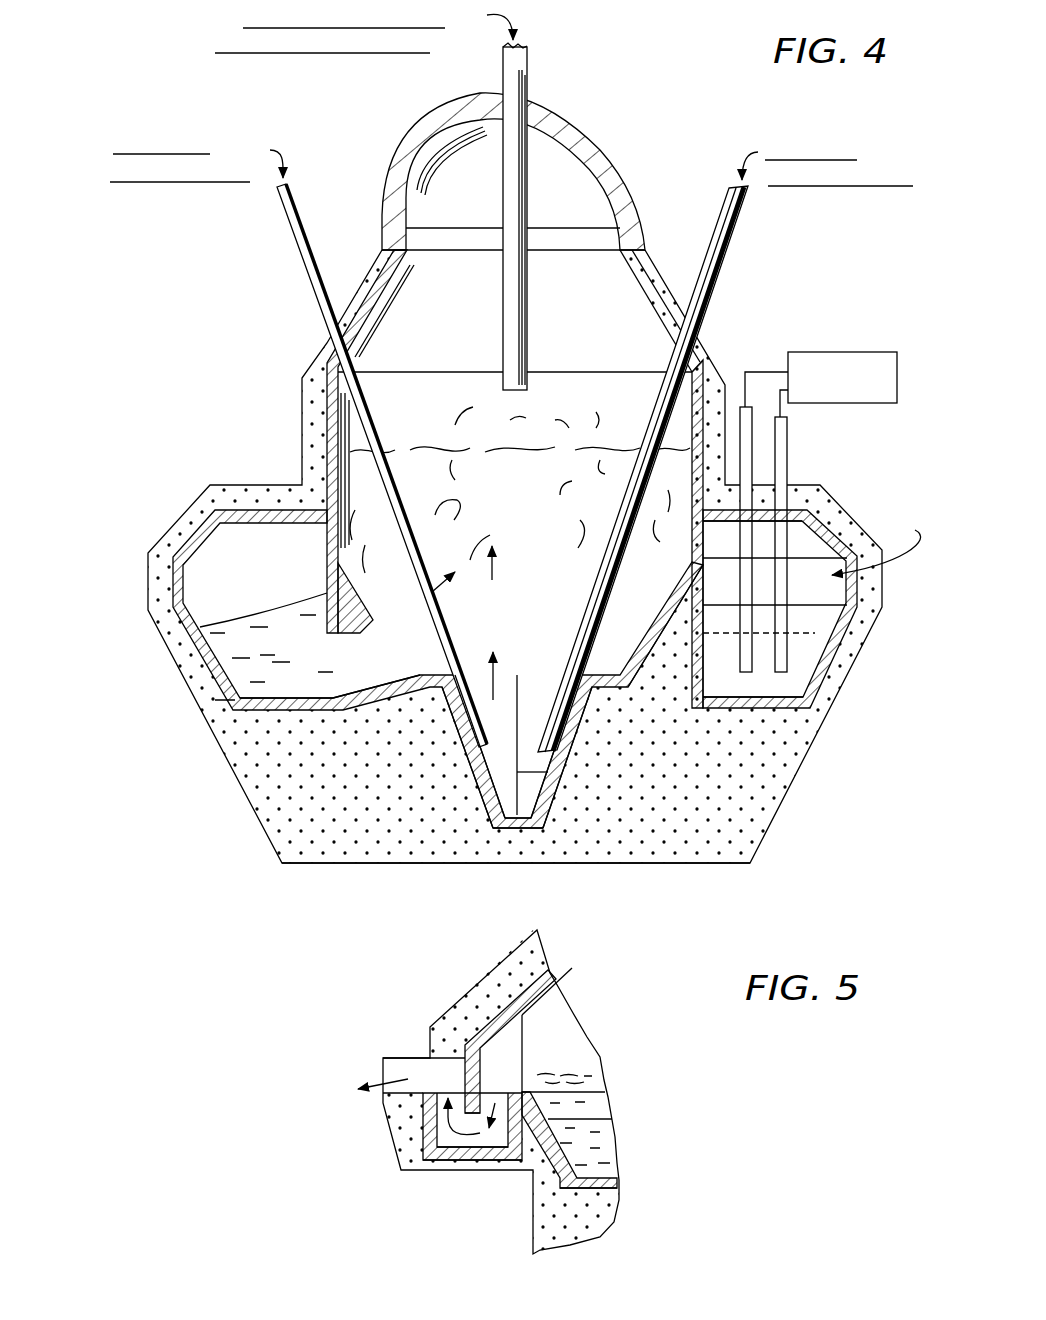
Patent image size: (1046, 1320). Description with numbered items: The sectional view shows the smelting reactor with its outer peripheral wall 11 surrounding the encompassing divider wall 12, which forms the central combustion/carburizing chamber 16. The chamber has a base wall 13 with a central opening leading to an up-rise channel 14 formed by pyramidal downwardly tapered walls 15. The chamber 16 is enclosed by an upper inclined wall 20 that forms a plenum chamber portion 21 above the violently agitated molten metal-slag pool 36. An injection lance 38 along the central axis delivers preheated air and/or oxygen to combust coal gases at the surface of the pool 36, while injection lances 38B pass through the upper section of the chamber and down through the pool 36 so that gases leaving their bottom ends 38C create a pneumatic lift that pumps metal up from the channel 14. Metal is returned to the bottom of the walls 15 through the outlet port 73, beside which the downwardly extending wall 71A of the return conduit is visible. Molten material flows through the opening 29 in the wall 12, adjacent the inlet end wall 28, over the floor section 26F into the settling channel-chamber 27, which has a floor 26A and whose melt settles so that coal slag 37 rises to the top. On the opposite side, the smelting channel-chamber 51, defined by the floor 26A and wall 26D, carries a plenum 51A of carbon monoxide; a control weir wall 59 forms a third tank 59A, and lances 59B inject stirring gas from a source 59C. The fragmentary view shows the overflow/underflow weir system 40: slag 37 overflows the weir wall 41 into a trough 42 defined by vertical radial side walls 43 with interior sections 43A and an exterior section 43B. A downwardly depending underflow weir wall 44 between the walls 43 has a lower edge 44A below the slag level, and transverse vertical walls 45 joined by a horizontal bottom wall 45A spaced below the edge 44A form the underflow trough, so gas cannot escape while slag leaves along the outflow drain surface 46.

In FIG. 4, the outer peripheral wall 11 is at (296, 375).
In FIG. 5, the outer peripheral wall 11 is at (553, 1200).
In FIG. 4, the divider wall 12 is at (695, 498).
In FIG. 4, the base wall 13 is at (423, 676).
In FIG. 4, the up-rise channel 14 is at (496, 776).
In FIG. 4, the pyramidal downwardly tapered walls 15 is at (458, 730).
In FIG. 4, the combustion/carburizing chamber 16 is at (359, 466).
In FIG. 4, the upper inclined wall 20 is at (360, 287).
In FIG. 4, the plenum chamber portion 21 is at (437, 290).
In FIG. 4, the floor 26A is at (268, 710).
In FIG. 5, the floor 26A is at (620, 1178).
In FIG. 4, the wall 26D is at (692, 690).
In FIG. 4, the floor section 26F is at (355, 697).
In FIG. 4, the settling channel-chamber 27 is at (208, 578).
In FIG. 4, the inlet end wall 28 is at (216, 548).
In FIG. 4, the opening 29 is at (355, 655).
In FIG. 4, the molten metal-slag pool 36 is at (370, 700).
In FIG. 5, the coal slag 37 is at (590, 1076).
In FIG. 4, the injection lance 38 is at (525, 86).
In FIG. 4, the injection lances 38B is at (311, 282).
In FIG. 4, the bottom ends of the lances 38C is at (493, 747).
In FIG. 5, the overflow/underflow weir system 40 is at (504, 1058).
In FIG. 5, the overflow weir wall 41 is at (493, 1090).
In FIG. 5, the trough 42 is at (498, 1138).
In FIG. 5, the vertical radial side walls 43 is at (458, 1085).
In FIG. 5, the interior wall sections 43A is at (500, 1060).
In FIG. 5, the exterior wall section 43B is at (402, 1068).
In FIG. 5, the underflow weir wall 44 is at (462, 1078).
In FIG. 5, the lower edge 44A is at (432, 1170).
In FIG. 5, the transverse vertical walls 45 is at (548, 1125).
In FIG. 5, the horizontal bottom wall 45A is at (463, 1172).
In FIG. 5, the outflow drain surface 46 is at (395, 1093).
In FIG. 4, the smelting channel-chamber 51 is at (876, 550).
In FIG. 4, the plenum 51A is at (802, 540).
In FIG. 4, the control weir wall 59 is at (860, 663).
In FIG. 4, the third tank 59A is at (766, 683).
In FIG. 4, the lances 59B is at (783, 470).
In FIG. 4, the stirring gas source 59C is at (830, 352).
In FIG. 4, the downwardly extending wall 71A is at (528, 797).
In FIG. 4, the outlet port 73 is at (527, 812).